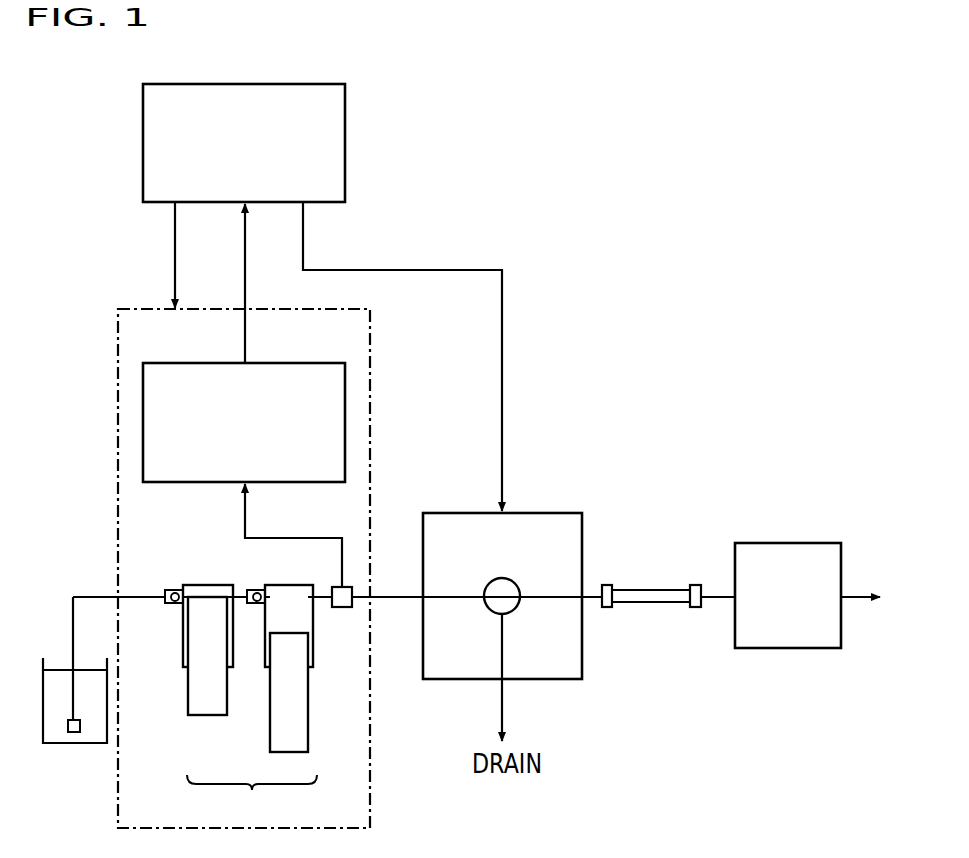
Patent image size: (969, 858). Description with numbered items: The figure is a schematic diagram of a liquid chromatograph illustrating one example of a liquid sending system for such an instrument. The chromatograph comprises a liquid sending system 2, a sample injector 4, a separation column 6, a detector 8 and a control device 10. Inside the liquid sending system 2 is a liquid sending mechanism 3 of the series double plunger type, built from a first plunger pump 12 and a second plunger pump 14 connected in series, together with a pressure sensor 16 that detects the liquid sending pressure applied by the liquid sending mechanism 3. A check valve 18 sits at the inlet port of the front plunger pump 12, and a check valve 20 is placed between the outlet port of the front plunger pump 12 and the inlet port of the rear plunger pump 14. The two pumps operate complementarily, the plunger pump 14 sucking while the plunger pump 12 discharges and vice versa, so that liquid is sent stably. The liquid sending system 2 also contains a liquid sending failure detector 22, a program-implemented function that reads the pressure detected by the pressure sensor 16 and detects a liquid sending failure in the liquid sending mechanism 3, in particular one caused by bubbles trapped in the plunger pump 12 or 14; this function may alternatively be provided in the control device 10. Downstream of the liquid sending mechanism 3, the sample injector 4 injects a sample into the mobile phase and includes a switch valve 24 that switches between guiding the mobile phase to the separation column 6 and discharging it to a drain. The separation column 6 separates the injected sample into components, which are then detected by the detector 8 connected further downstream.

The liquid sending system 2 is at (155, 305).
The liquid sending mechanism 3 is at (252, 799).
The sample injector 4 is at (545, 513).
The separation column 6 is at (647, 590).
The detector 8 is at (795, 543).
The control device 10 is at (310, 83).
The plunger pump 12 is at (182, 655).
The plunger pump 14 is at (267, 655).
The pressure sensor 16 is at (342, 607).
The check valve 18 is at (168, 590).
The check valve 20 is at (250, 590).
The liquid sending failure detector 22 is at (143, 416).
The switch valve 24 is at (510, 578).